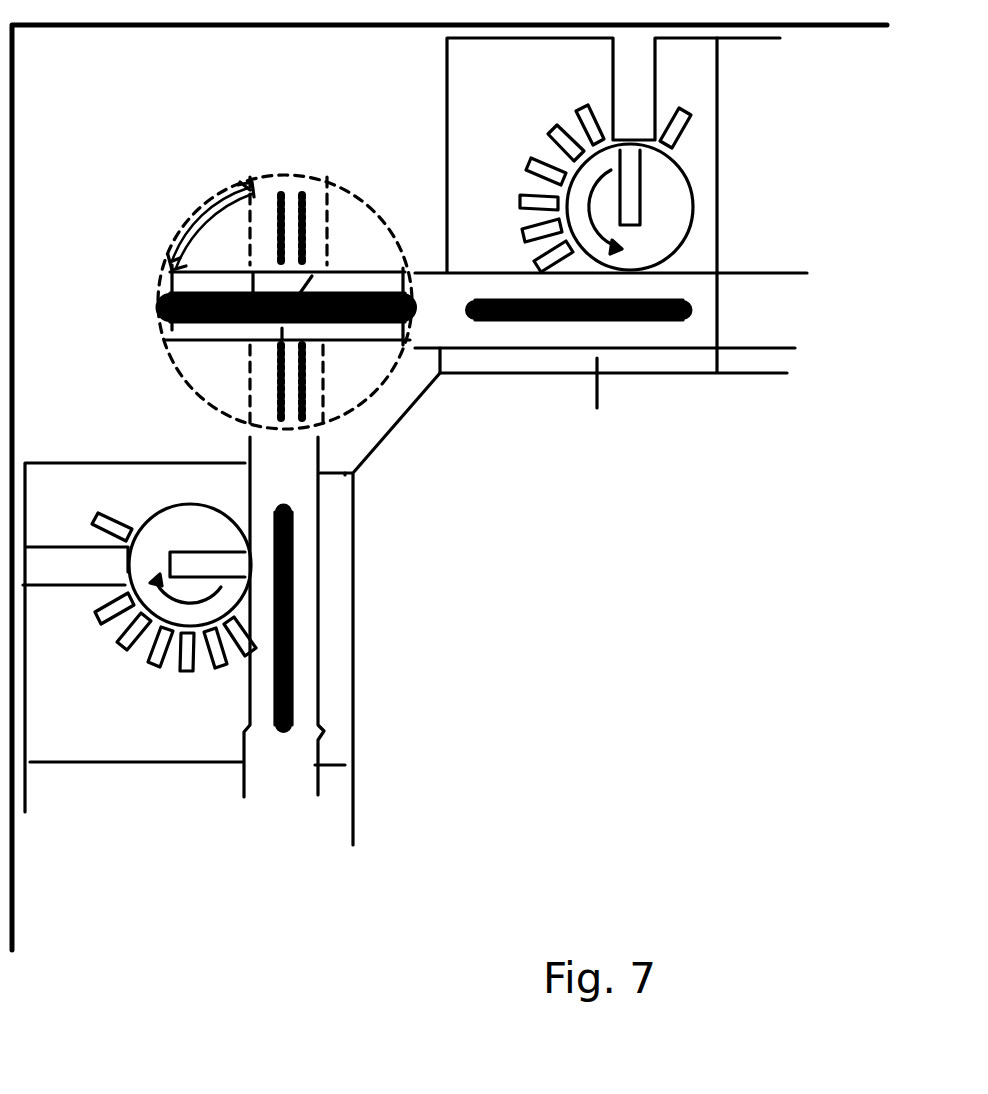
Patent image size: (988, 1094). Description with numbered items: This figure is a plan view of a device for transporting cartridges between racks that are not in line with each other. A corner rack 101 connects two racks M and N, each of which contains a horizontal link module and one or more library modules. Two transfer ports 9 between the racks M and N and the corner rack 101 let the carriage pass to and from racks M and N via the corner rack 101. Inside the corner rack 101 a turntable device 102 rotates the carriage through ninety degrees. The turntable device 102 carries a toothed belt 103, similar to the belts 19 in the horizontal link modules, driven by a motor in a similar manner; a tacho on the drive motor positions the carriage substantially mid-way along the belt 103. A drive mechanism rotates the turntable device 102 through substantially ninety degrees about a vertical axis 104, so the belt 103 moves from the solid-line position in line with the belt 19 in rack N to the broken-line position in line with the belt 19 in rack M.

The transfer port 9 is at (460, 270).
The toothed belt 19 is at (685, 313).
The corner rack 101 is at (395, 411).
The turntable device 102 is at (160, 183).
The toothed belt 103 is at (170, 306).
The vertical axis 104 is at (320, 295).
The rack N is at (591, 402).
The rack M is at (345, 638).